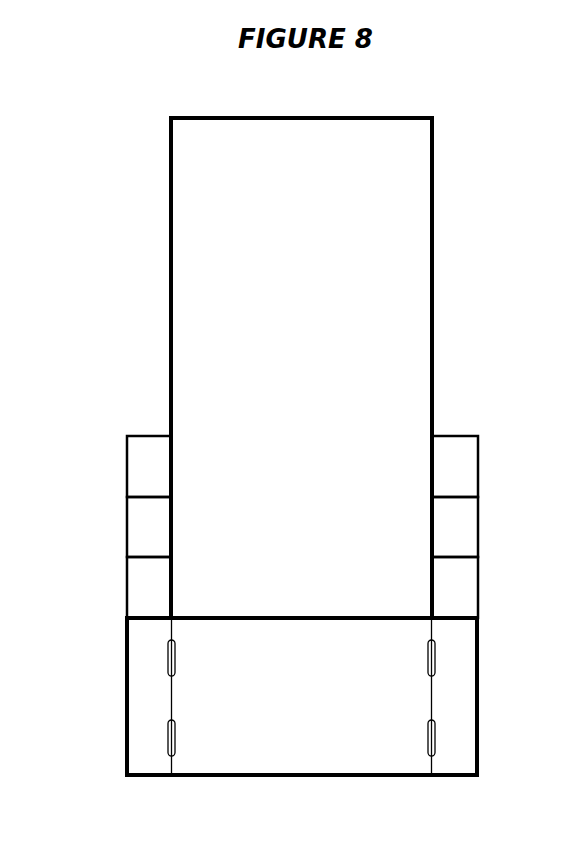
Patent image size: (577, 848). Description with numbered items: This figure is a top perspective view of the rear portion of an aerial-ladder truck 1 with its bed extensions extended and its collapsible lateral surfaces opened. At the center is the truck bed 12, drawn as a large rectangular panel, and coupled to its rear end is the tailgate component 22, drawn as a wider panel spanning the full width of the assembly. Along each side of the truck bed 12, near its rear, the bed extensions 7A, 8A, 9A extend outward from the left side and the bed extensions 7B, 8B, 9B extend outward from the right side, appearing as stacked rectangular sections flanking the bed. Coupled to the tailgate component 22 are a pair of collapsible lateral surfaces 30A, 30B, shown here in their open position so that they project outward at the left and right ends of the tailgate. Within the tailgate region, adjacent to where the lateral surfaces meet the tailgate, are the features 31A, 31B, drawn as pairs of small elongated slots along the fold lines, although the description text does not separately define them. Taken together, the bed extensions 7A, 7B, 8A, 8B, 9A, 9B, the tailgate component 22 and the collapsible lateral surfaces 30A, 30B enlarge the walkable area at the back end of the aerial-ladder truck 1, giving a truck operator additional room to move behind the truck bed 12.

The aerial-ladder truck 1 is at (102, 258).
The truck bed 12 is at (311, 362).
The tailgate component 22 is at (311, 703).
The bed extension 7A is at (132, 447).
The bed extension 8A is at (132, 507).
The bed extension 9A is at (132, 567).
The bed extension 7B is at (467, 447).
The bed extension 8B is at (467, 507).
The bed extension 9B is at (467, 567).
The collapsible lateral surface 30A is at (131, 728).
The collapsible lateral surface 30B is at (470, 728).
The left slots 31A is at (174, 738).
The right slots 31B is at (429, 738).